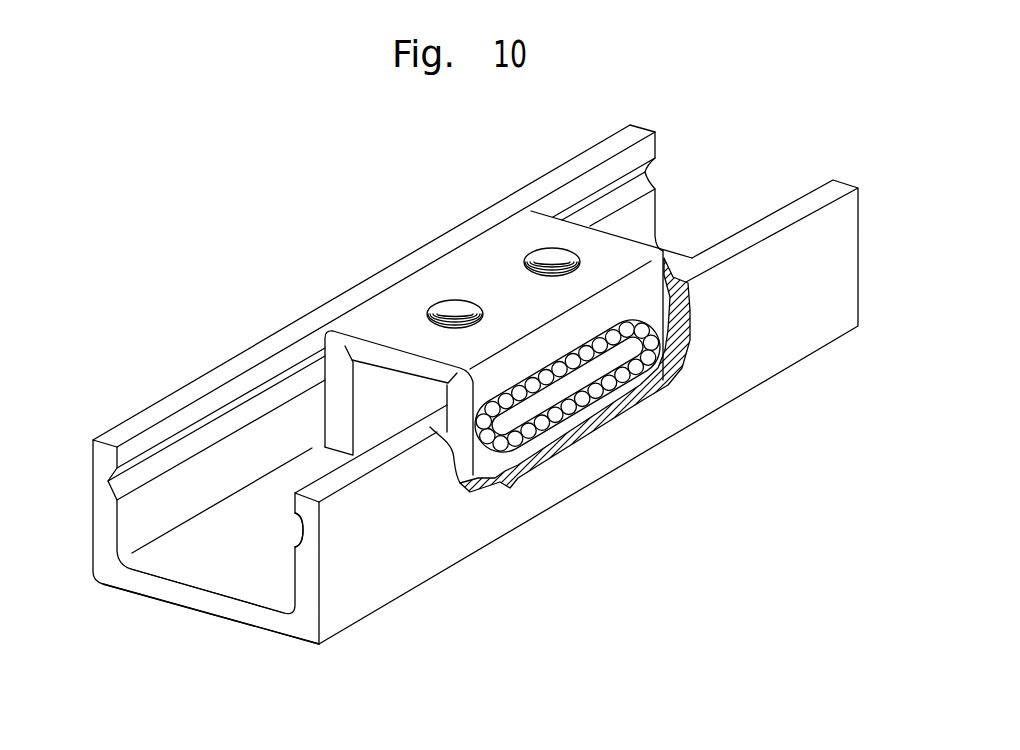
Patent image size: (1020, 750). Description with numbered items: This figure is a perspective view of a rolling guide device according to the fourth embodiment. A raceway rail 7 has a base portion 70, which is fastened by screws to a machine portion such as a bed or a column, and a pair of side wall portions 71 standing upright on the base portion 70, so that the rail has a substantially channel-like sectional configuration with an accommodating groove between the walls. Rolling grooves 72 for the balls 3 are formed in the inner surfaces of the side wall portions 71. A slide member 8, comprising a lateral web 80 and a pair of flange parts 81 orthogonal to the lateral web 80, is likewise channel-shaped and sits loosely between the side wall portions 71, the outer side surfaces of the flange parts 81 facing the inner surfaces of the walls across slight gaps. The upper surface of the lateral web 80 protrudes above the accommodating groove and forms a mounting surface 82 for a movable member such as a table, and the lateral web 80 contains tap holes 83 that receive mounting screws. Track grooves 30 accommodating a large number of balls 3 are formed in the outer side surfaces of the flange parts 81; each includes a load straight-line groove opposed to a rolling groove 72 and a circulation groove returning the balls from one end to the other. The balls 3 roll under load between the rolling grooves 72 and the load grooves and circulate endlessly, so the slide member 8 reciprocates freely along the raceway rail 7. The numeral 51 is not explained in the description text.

The balls 3 is at (578, 415).
The raceway rail 7 is at (420, 606).
The slide member 8 is at (469, 320).
The track groove 30 is at (612, 403).
The rail side wall top 51 is at (153, 417).
The base portion 70 is at (198, 603).
The side wall portion 71 is at (447, 538).
The rolling groove 72 is at (233, 417).
The lateral web 80 is at (360, 361).
The flange part 81 is at (338, 401).
The mounting surface 82 is at (478, 270).
The tap hole 83 is at (452, 300).